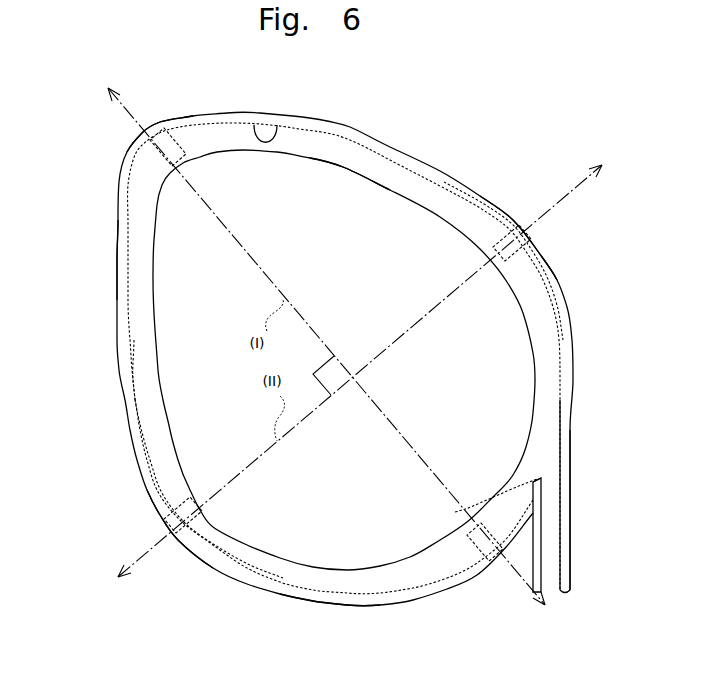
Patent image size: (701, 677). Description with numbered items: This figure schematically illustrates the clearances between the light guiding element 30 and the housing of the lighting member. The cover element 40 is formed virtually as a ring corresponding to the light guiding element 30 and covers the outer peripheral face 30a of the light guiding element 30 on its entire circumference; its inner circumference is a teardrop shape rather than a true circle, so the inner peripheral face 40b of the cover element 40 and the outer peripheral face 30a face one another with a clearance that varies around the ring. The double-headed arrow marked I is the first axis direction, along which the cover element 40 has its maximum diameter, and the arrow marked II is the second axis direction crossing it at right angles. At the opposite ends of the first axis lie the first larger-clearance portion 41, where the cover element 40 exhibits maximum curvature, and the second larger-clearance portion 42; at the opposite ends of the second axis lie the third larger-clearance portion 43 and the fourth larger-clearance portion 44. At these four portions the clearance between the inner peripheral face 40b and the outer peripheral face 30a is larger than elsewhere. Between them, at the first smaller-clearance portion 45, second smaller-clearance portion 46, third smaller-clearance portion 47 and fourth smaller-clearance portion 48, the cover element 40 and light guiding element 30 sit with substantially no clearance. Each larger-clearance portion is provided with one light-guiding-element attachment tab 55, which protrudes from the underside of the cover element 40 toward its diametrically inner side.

The light guiding element 30 is at (390, 176).
The outer peripheral face of the light guiding element 30a is at (345, 150).
The cover element 40 is at (330, 122).
The inner peripheral face of the cover element 40b is at (260, 128).
The first larger-clearance portion 41 is at (148, 144).
The second larger-clearance portion 42 is at (477, 576).
The third larger-clearance portion 43 is at (168, 526).
The fourth larger-clearance portion 44 is at (523, 220).
The first smaller-clearance portion 45 is at (117, 325).
The second smaller-clearance portion 46 is at (315, 602).
The third smaller-clearance portion 47 is at (550, 357).
The fourth smaller-clearance portion 48 is at (392, 148).
The light-guiding-element attachment tab 55 is at (183, 133).